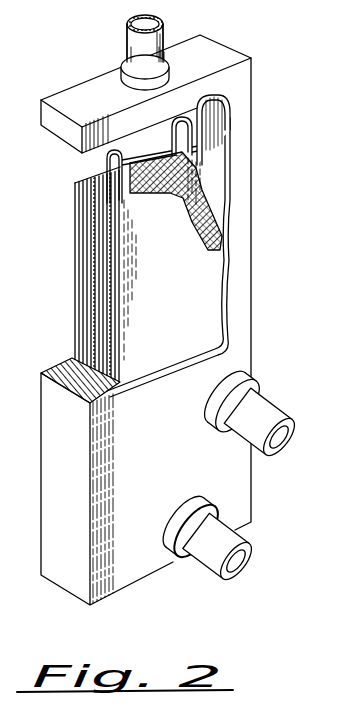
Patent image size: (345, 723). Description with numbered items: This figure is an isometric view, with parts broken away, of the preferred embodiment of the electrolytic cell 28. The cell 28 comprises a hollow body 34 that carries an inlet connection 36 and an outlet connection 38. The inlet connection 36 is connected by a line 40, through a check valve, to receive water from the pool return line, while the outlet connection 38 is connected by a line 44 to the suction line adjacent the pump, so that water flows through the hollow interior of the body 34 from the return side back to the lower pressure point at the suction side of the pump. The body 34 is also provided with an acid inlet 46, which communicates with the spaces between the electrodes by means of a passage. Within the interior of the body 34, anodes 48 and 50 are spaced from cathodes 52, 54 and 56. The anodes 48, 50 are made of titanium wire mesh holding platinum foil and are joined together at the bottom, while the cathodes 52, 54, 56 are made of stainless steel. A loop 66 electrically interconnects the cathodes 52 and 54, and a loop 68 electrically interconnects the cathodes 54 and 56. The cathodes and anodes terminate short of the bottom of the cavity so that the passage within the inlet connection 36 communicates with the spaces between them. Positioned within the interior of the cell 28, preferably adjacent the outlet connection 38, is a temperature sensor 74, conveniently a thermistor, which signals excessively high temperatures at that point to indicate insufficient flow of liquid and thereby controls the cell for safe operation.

The electrolytic cell 28 is at (287, 78).
The hollow body 34 is at (247, 317).
The inlet connection 36 is at (177, 558).
The outlet connection 38 is at (166, 80).
The line 40 is at (240, 557).
The line 44 is at (125, 42).
The acid inlet 46 is at (245, 383).
The anode 48 is at (93, 217).
The anode 50 is at (110, 255).
The cathode 52 is at (75, 287).
The cathode 54 is at (203, 183).
The cathode 56 is at (217, 263).
The loop 66 is at (195, 140).
The loop 68 is at (110, 162).
The temperature sensor 74 is at (230, 105).